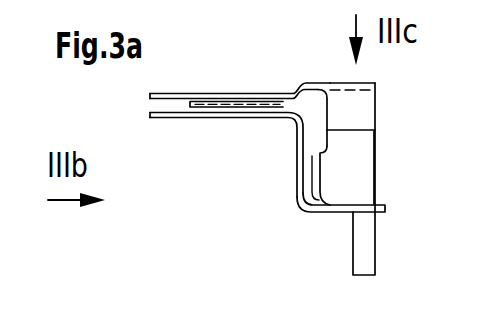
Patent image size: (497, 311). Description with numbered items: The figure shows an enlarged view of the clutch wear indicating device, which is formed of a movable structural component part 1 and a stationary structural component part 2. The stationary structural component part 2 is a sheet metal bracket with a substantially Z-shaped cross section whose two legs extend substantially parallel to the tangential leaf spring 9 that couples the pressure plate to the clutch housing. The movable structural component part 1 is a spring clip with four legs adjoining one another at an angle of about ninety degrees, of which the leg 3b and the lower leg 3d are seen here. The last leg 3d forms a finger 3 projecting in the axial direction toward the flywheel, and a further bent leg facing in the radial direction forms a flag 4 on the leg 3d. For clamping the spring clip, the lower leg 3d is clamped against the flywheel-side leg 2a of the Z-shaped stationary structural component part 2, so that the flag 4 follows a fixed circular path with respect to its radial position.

The movable structural component part 1 is at (183, 92).
The tangential leaf spring 9 is at (248, 101).
The stationary structural component part 2 is at (175, 119).
The flywheel-side leg 2a is at (335, 213).
The flag 4 is at (318, 184).
The finger 3 is at (367, 252).
The leg 3b is at (367, 111).
The lower leg 3d is at (366, 168).